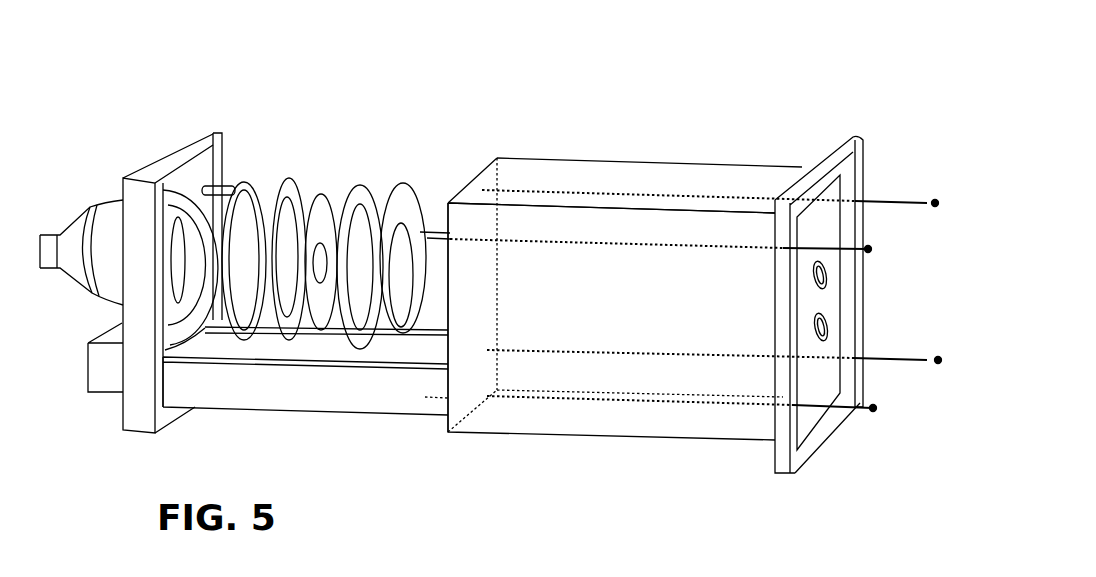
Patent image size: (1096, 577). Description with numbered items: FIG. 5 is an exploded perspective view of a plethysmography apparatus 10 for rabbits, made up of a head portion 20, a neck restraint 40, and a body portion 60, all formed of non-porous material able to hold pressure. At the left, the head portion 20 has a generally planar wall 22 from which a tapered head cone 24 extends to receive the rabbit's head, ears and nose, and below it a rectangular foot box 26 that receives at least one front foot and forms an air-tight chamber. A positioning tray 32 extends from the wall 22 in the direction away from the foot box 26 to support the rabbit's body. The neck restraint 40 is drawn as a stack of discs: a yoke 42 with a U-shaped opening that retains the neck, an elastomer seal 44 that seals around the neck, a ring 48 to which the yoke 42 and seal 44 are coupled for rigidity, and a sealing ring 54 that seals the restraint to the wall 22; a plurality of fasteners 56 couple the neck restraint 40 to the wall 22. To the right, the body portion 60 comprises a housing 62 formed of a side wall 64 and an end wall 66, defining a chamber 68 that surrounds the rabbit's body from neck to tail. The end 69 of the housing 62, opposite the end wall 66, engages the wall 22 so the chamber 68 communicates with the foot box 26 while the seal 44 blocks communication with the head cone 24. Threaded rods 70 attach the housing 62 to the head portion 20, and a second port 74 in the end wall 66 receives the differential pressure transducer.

The plethysmography apparatus 10 is at (609, 74).
The head portion 20 is at (170, 135).
The wall 22 is at (160, 160).
The head cone 24 is at (93, 218).
The foot box 26 is at (98, 369).
The positioning tray 32 is at (262, 390).
The neck restraint 40 is at (423, 117).
The yoke 42 is at (407, 185).
The seal 44 is at (327, 192).
The ring 48 is at (292, 180).
The sealing ring 54 is at (250, 178).
The fasteners 56 is at (218, 133).
The body portion 60 is at (860, 133).
The housing 62 is at (617, 163).
The side wall 64 is at (680, 170).
The end wall 66 is at (830, 298).
The chamber 68 is at (663, 287).
The end 69 is at (493, 160).
The threaded rods 70 is at (825, 320).
The second port 74 is at (823, 267).